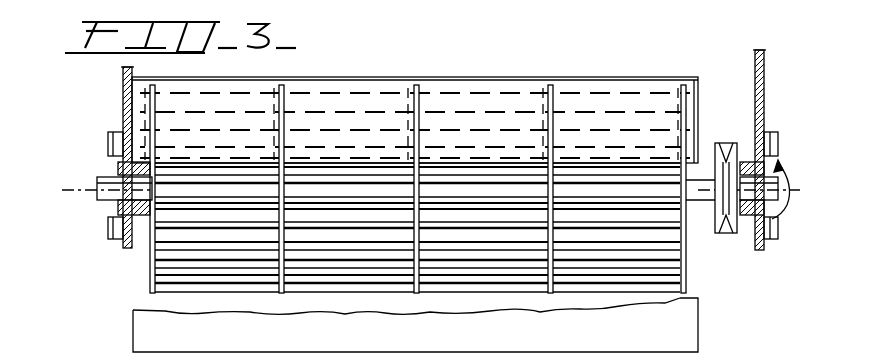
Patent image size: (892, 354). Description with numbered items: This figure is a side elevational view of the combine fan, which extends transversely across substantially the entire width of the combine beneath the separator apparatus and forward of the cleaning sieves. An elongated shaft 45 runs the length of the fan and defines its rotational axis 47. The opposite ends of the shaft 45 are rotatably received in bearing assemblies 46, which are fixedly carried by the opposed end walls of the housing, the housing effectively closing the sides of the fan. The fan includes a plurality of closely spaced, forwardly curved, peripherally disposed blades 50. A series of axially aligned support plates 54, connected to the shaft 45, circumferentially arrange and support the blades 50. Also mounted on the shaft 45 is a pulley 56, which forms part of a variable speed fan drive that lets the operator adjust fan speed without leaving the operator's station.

The shaft 45 is at (100, 177).
The bearing assemblies 46 is at (112, 208).
The rotational axis 47 is at (72, 189).
The blades 50 is at (152, 250).
The support plates 54 is at (277, 293).
The pulley 56 is at (723, 143).